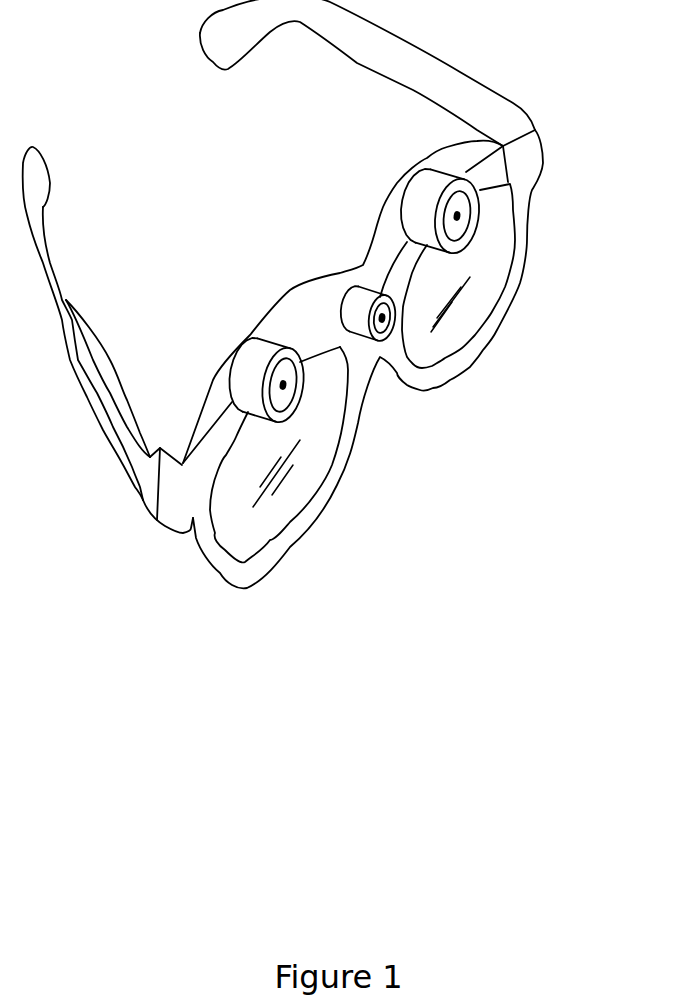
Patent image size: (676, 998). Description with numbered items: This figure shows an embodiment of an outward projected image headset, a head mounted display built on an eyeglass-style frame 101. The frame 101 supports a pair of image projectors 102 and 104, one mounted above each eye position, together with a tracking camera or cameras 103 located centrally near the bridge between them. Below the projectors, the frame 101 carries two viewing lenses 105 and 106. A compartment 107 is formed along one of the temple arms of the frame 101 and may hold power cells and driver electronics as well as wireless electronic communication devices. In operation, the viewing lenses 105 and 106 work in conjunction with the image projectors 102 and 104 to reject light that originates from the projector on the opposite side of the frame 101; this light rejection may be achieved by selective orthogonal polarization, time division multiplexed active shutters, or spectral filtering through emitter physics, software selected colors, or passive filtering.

The frame 101 is at (197, 555).
The image projector 102 is at (290, 343).
The tracking camera 103 is at (373, 295).
The image projector 104 is at (456, 180).
The viewing lens 105 is at (260, 533).
The viewing lens 106 is at (440, 347).
The compartment 107 is at (95, 330).